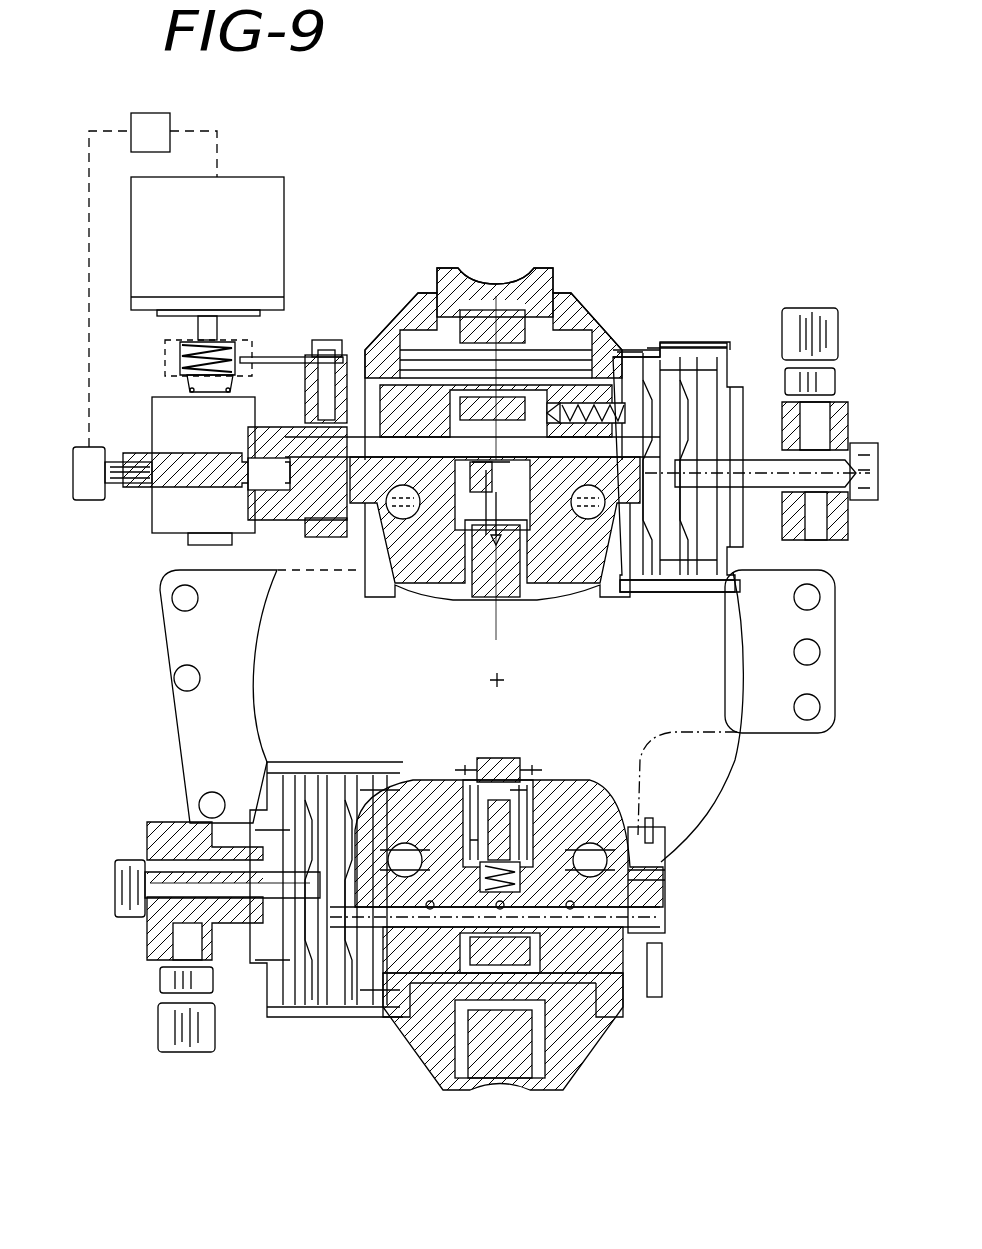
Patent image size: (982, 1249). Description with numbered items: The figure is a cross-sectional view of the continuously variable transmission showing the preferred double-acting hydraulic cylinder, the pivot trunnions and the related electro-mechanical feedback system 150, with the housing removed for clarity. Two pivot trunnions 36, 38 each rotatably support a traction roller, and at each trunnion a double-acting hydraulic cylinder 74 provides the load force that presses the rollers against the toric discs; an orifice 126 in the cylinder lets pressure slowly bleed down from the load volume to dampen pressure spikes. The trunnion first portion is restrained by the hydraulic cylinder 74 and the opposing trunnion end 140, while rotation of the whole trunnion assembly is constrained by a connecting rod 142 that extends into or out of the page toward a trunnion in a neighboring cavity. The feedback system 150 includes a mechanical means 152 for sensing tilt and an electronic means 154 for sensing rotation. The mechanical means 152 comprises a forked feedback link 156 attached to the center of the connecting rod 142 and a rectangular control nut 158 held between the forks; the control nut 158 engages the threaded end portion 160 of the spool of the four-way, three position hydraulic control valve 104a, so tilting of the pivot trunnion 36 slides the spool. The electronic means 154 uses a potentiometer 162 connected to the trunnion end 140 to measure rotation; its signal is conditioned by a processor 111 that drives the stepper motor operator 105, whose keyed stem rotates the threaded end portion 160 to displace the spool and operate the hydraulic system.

The pivot trunnion 36 is at (458, 482).
The pivot trunnion 38 is at (455, 880).
The hydraulic cylinder 74 is at (668, 343).
The four-way three position hydraulic control valve 104a is at (187, 512).
The stepper motor operator 105 is at (224, 245).
The processor 111 is at (165, 145).
The orifice 126 is at (632, 362).
The trunnion end 140 is at (277, 510).
The connecting rod 142 is at (306, 385).
The electro-mechanical feedback system 150 is at (380, 216).
The mechanical means for sensing tilt 152 is at (248, 315).
The electronic means for sensing rotation 154 is at (64, 490).
The feedback link 156 is at (288, 358).
The control nut 158 is at (247, 338).
The threaded end portion 160 is at (182, 345).
The potentiometer 162 is at (84, 490).